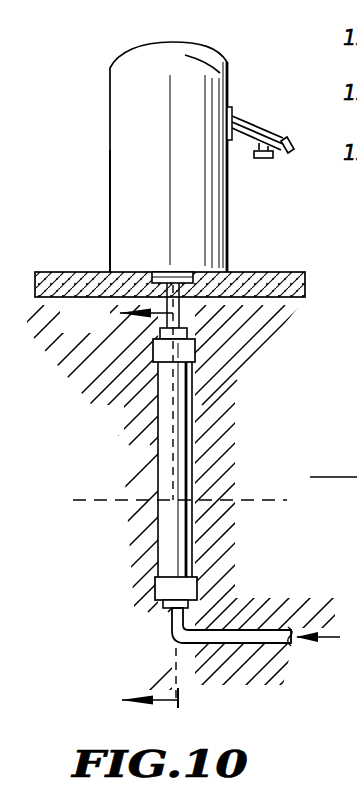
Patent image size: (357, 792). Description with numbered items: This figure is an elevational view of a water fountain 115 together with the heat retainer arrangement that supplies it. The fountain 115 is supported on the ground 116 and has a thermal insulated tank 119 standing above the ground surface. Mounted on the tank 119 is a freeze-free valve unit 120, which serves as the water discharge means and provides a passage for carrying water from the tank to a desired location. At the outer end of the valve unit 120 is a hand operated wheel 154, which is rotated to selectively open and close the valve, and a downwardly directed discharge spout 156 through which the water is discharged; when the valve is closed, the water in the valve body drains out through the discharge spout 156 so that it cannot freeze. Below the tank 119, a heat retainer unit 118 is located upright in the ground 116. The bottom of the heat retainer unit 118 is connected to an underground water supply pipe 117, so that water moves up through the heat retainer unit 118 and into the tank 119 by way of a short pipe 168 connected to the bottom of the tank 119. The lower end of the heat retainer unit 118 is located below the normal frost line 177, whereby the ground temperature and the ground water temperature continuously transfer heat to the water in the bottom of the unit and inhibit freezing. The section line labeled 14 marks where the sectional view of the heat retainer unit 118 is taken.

The water fountain 115 is at (148, 122).
The thermal insulated tank 119 is at (118, 186).
The freeze-free valve unit 120 is at (248, 113).
The hand operated wheel 154 is at (292, 143).
The discharge spout 156 is at (265, 158).
The ground 116 is at (294, 272).
The heat retainer unit 118 is at (173, 417).
The underground water supply pipe 117 is at (172, 630).
The normal frost line 177 is at (145, 500).
The short pipe 168 is at (146, 309).
The section line 14- 14 is at (188, 505).